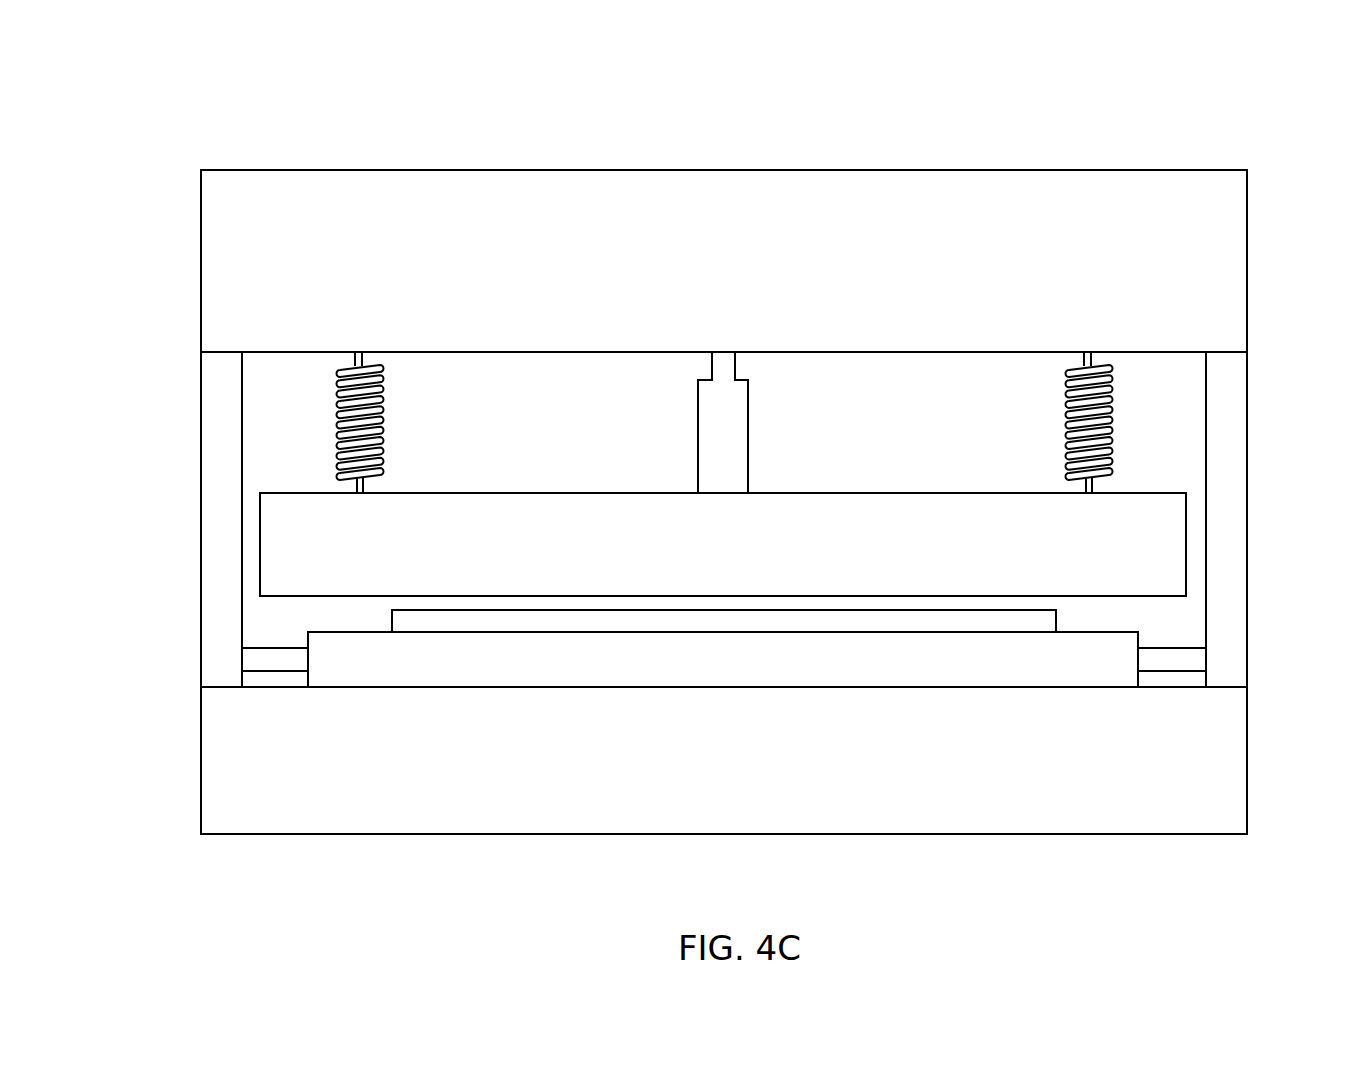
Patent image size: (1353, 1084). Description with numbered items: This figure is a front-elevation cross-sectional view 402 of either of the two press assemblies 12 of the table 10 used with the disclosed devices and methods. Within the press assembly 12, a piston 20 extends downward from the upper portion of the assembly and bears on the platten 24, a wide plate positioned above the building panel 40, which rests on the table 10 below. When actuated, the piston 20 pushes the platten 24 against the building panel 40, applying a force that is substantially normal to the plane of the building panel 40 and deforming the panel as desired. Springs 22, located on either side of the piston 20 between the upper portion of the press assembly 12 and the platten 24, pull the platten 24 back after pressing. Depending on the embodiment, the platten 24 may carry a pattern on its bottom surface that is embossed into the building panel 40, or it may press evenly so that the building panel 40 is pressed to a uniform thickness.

The front-elevation cross-sectional view 402 is at (193, 108).
The press assembly 12 is at (1247, 170).
The platten 24 is at (1186, 553).
The piston 20 is at (748, 413).
The spring 22 is at (382, 415).
The building panel 40 is at (993, 625).
The table 10 is at (425, 683).